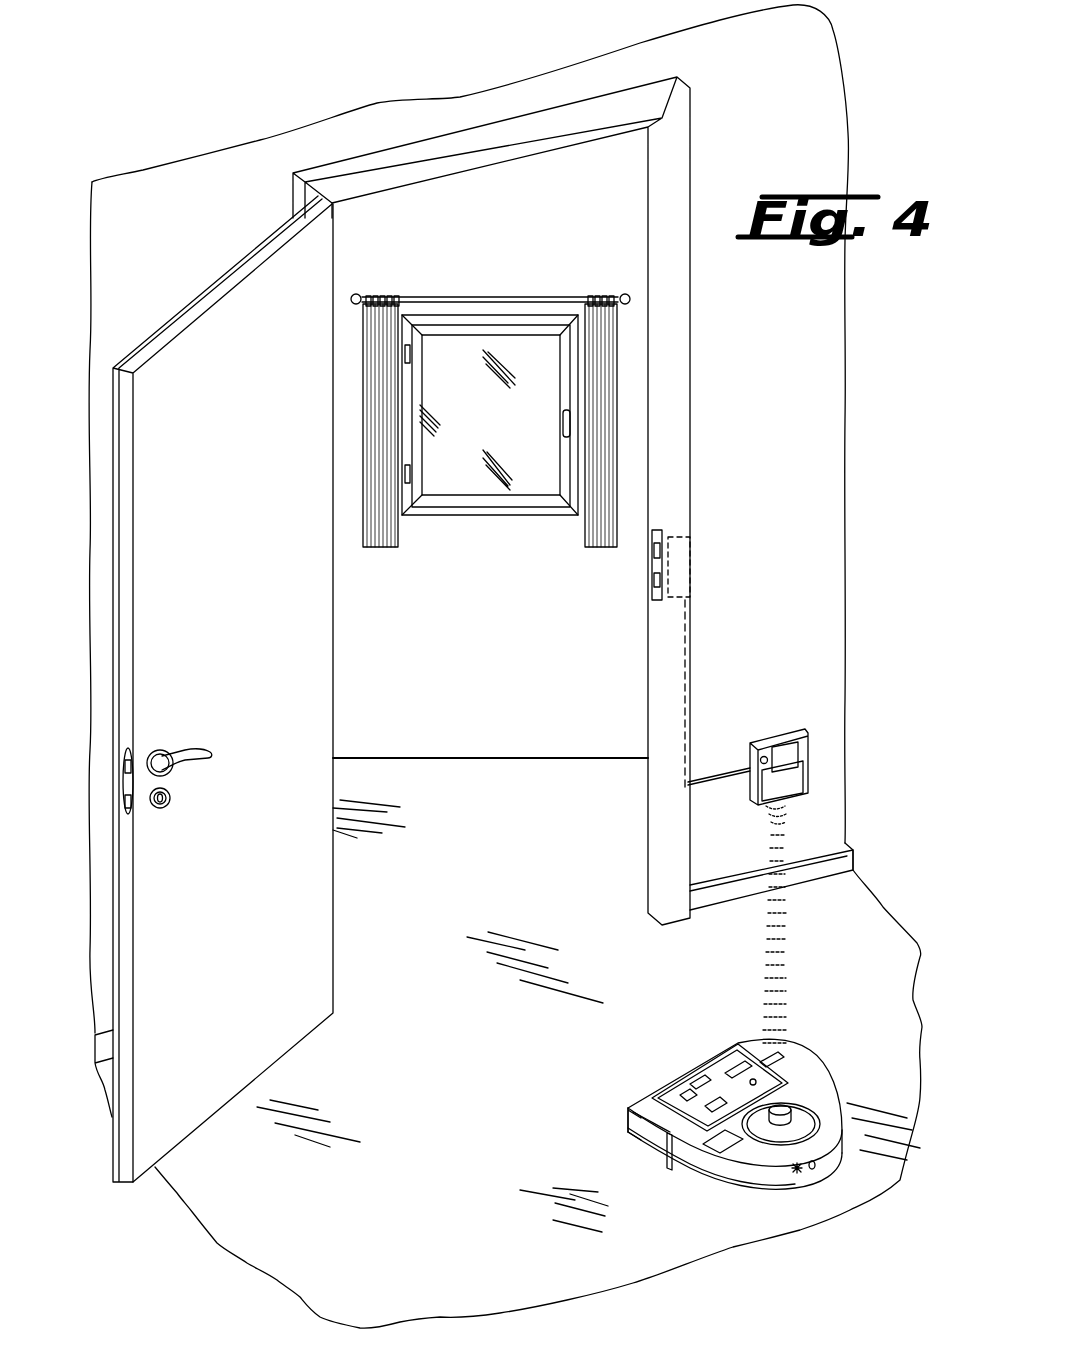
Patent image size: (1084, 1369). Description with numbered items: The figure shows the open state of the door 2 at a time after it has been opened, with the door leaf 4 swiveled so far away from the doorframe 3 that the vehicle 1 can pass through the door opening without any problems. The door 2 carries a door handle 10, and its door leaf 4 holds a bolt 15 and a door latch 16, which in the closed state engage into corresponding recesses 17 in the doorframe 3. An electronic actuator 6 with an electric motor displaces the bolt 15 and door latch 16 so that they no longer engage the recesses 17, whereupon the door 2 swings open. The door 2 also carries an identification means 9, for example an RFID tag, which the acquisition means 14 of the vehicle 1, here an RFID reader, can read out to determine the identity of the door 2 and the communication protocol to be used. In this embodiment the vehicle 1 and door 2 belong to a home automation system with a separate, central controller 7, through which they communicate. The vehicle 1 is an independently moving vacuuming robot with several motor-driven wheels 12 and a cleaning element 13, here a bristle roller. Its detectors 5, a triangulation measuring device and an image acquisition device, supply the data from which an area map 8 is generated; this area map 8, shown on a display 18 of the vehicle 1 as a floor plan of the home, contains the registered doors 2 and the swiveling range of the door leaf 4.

The vehicle 1 is at (833, 1165).
The door 2 is at (198, 288).
The doorframe 3 is at (412, 168).
The door leaf 4 is at (307, 710).
The detectors 5 is at (781, 1107).
The electronic actuator 6 is at (680, 557).
The controller 7 is at (800, 747).
The area map 8 is at (737, 1075).
The identification means 9 is at (113, 813).
The door handle 10 is at (208, 752).
The motor-driven wheels 12 is at (693, 1180).
The cleaning element 13 is at (650, 1153).
The acquisition means 14 is at (800, 1120).
The bolt 15 is at (130, 803).
The door latch 16 is at (127, 767).
The recesses 17 is at (655, 579).
The display 18 is at (628, 1120).